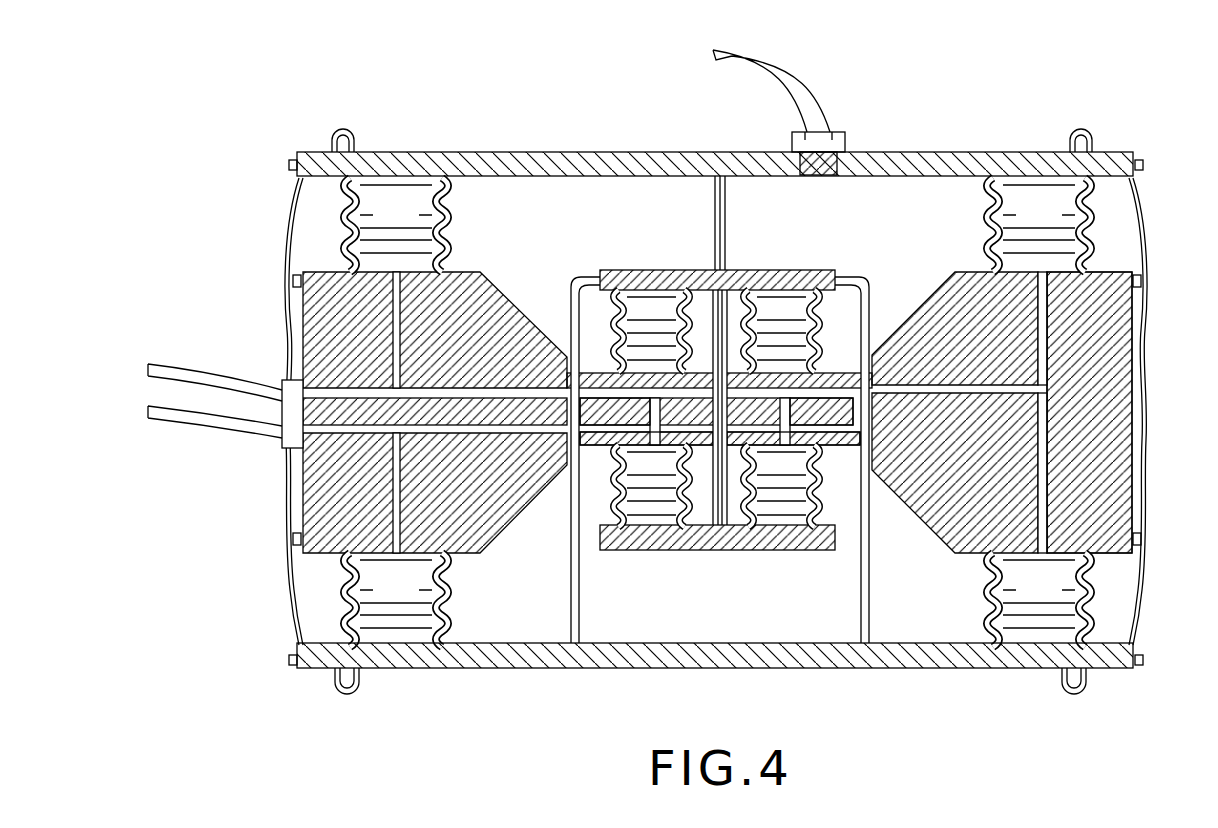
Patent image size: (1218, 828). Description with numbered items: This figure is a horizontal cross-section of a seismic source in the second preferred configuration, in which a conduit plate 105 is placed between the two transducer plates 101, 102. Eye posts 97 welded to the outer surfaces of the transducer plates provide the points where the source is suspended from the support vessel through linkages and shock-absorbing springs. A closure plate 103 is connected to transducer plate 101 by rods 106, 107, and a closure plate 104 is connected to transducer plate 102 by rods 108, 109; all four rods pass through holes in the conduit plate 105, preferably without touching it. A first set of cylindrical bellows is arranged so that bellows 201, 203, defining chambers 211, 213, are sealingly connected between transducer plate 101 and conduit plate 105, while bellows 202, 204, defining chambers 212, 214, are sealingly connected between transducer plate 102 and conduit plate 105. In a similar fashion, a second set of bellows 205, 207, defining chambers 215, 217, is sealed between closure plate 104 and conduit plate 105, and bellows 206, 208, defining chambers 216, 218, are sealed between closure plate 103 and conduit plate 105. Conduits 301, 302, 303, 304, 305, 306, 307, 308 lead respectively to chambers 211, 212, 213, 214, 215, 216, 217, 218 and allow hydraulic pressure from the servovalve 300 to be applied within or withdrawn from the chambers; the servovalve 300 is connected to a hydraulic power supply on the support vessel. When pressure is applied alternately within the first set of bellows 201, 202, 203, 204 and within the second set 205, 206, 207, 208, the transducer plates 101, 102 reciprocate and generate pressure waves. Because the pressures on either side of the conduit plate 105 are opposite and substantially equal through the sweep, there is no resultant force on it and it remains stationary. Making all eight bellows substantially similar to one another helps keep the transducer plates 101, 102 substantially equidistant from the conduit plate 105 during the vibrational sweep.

The eye post 97 is at (356, 137).
The transducer plate 101 is at (933, 150).
The transducer plate 102 is at (775, 660).
The closure plate 103 is at (703, 549).
The closure plate 104 is at (760, 270).
The conduit plate 105 is at (1105, 343).
The rod 106 is at (681, 350).
The rod 107 is at (714, 213).
The rod 108 is at (572, 617).
The rod 109 is at (861, 605).
The cylindrical bellows 201 is at (433, 225).
The cylindrical bellows 202 is at (430, 600).
The cylindrical bellows 203 is at (996, 225).
The cylindrical bellows 204 is at (1010, 600).
The cylindrical bellows 205 is at (604, 304).
The cylindrical bellows 206 is at (603, 516).
The cylindrical bellows 207 is at (831, 304).
The cylindrical bellows 208 is at (820, 520).
The chamber 211 is at (396, 225).
The chamber 212 is at (396, 600).
The chamber 213 is at (1039, 225).
The chamber 214 is at (972, 600).
The chamber 215 is at (655, 300).
The chamber 216 is at (660, 508).
The chamber 217 is at (770, 327).
The chamber 218 is at (780, 503).
The servovalve 300 is at (292, 395).
The conduit 301 is at (396, 313).
The conduit 302 is at (396, 490).
The conduit 303 is at (1043, 358).
The conduit 304 is at (1043, 444).
The conduit 305 is at (615, 411).
The conduit 306 is at (603, 450).
The conduit 307 is at (822, 411).
The conduit 308 is at (782, 440).